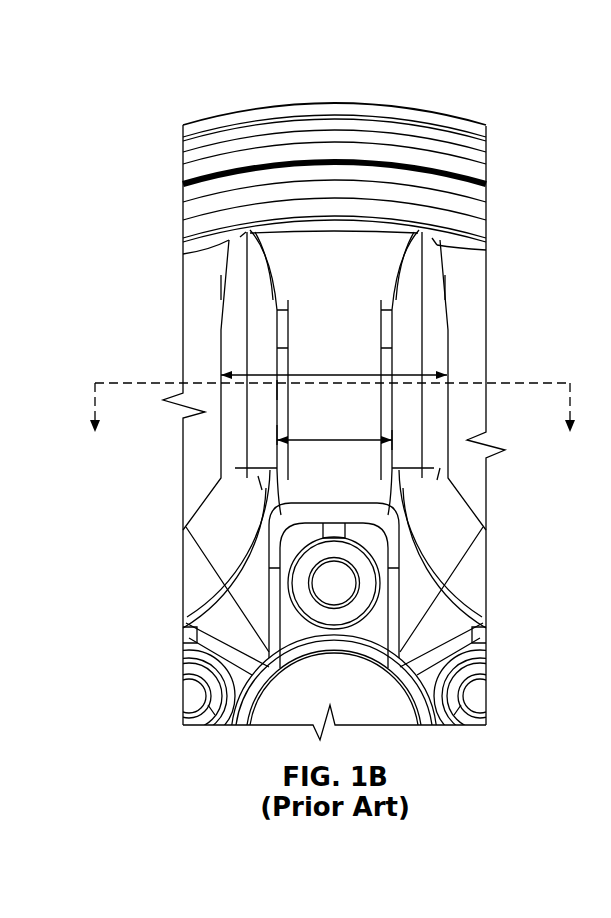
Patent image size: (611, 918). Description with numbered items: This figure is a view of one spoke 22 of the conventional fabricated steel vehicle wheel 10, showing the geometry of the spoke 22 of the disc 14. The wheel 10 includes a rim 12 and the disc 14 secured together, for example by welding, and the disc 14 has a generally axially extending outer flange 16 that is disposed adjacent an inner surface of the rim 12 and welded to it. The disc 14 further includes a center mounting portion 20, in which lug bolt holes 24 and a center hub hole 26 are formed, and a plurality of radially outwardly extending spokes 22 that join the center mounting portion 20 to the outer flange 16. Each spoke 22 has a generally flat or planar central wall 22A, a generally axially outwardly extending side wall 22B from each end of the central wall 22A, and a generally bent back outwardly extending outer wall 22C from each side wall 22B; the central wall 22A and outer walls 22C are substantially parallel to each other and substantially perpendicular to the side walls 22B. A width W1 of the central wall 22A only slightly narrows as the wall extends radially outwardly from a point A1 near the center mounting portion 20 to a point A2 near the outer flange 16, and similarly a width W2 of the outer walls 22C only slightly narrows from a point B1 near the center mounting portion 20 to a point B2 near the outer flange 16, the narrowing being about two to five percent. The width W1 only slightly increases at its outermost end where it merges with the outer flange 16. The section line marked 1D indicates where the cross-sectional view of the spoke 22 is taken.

The fabricated steel vehicle wheel 10 is at (438, 78).
The rim 12 is at (461, 117).
The disc 14 is at (212, 326).
The outer flange 16 is at (474, 247).
The center mounting portion 20 is at (417, 605).
The spoke 22 is at (355, 388).
The central wall 22A is at (300, 385).
The side wall 22B is at (275, 430).
The outer wall 22C is at (225, 280).
The lug bolt hole 24 is at (465, 700).
The center hub hole 26 is at (384, 673).
The point near center mounting portion A1 is at (258, 476).
The point near outer flange A2 is at (240, 237).
The point near center mounting portion B1 is at (440, 468).
The point near outer flange B2 is at (437, 245).
The width of central wall W1 is at (330, 443).
The width of outer walls W2 is at (328, 372).
The section line 1D is at (335, 424).